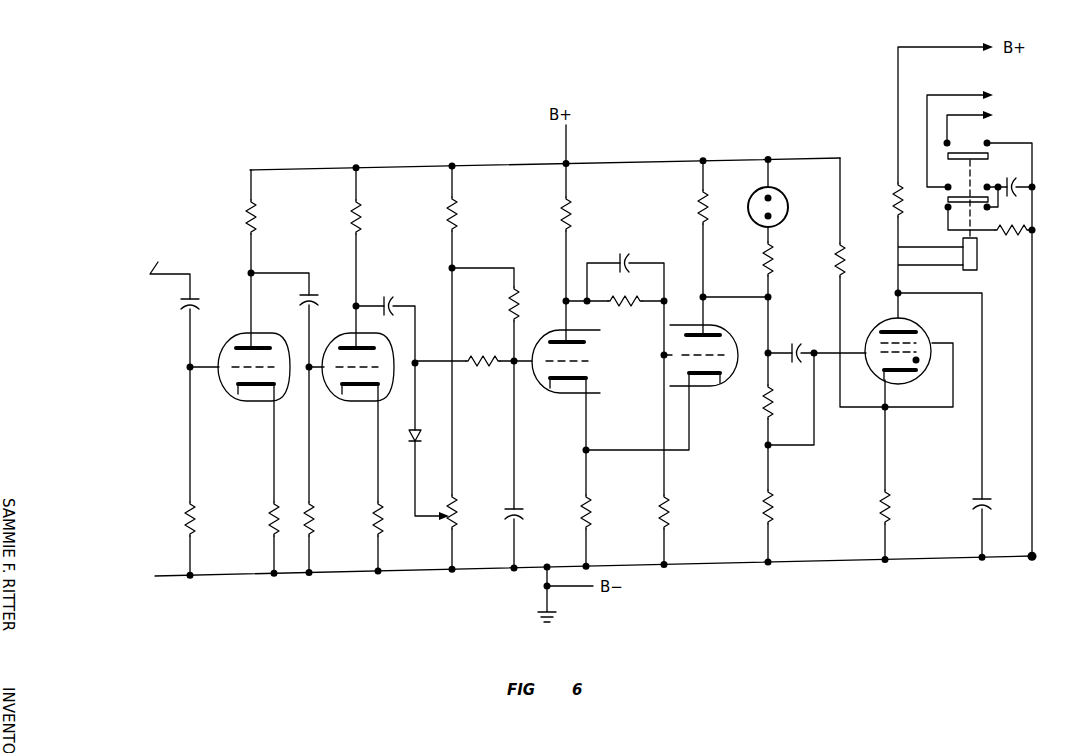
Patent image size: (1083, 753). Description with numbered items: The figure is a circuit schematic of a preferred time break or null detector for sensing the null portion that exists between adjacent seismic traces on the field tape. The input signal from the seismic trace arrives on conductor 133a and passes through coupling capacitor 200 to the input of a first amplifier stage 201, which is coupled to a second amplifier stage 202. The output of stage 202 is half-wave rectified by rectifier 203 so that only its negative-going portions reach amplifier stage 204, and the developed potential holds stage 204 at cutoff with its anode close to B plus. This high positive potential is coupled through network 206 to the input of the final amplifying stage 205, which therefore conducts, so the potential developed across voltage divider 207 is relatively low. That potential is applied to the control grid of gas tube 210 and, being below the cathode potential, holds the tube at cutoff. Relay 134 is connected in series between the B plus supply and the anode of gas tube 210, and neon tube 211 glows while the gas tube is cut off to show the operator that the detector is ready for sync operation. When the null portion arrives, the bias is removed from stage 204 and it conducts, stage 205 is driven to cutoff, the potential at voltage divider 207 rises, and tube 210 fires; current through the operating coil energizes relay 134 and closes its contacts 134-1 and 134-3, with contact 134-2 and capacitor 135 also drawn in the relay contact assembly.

The conductor 133a is at (104, 271).
The coupling capacitor 200 is at (195, 296).
The first amplifier stage 201 is at (240, 401).
The second amplifier stage 202 is at (347, 401).
The rectifier 203 is at (410, 445).
The amplifier stage 204 is at (553, 327).
The final amplifying stage 205 is at (702, 326).
The network 206 is at (623, 258).
The voltage divider 207 is at (765, 447).
The gas tube 210 is at (886, 323).
The neon tube 211 is at (784, 199).
The relay 134 is at (974, 272).
The relay contact 134-1 is at (950, 193).
The relay contact 134-2 is at (973, 208).
The relay contact 134-3 is at (970, 150).
The capacitor 135 is at (1017, 180).